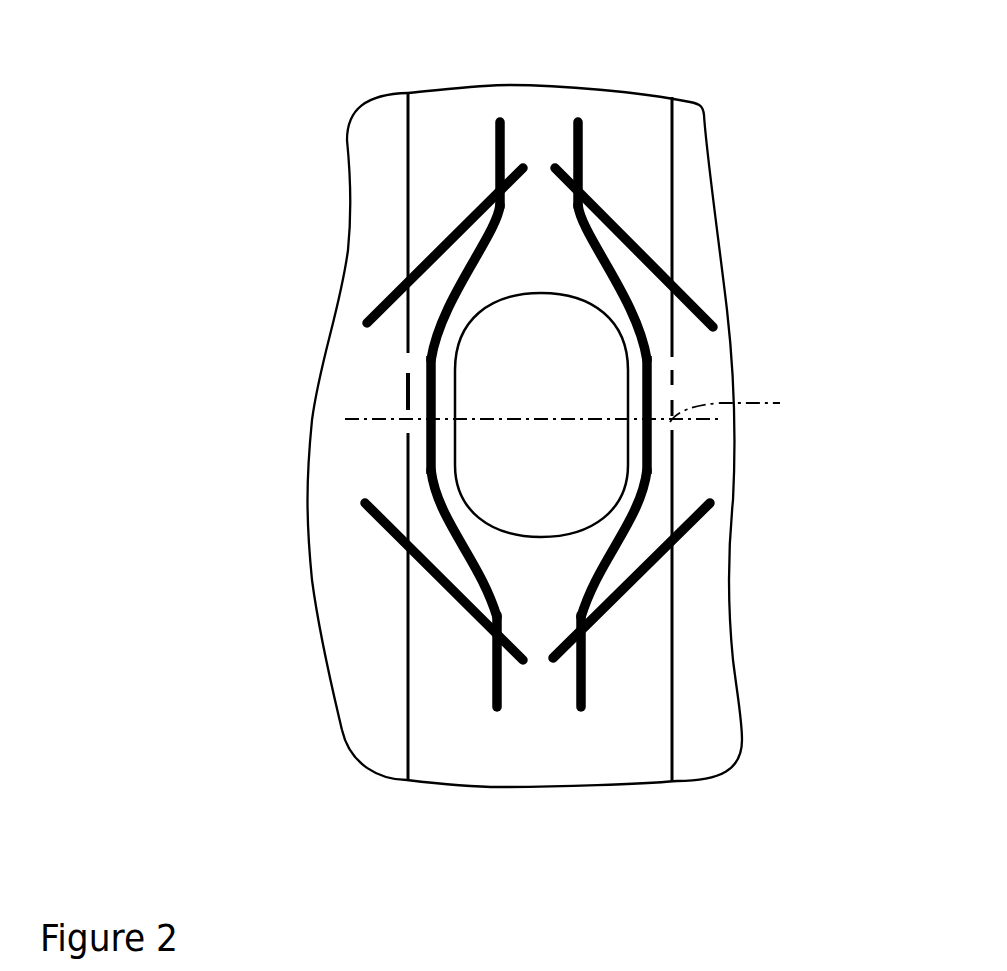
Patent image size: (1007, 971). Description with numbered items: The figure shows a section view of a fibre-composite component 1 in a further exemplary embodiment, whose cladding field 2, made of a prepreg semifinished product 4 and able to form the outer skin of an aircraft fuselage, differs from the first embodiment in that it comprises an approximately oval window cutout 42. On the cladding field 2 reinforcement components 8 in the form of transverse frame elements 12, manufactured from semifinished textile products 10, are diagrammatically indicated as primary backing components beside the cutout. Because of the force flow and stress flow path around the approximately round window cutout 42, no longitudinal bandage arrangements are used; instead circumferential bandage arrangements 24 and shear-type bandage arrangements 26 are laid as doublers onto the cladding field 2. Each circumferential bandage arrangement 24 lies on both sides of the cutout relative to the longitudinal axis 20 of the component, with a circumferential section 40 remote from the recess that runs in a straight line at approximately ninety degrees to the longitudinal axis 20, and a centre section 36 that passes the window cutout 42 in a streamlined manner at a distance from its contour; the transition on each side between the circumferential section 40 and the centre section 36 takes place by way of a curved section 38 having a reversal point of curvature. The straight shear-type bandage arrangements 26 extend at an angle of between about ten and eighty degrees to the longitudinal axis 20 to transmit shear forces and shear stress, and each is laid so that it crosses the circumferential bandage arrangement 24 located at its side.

The fibre-composite component 1 is at (235, 72).
The cladding field 2 is at (717, 200).
The prepreg semifinished product 4 is at (612, 757).
The reinforcement components 8 is at (496, 436).
The semifinished textile products 10 is at (496, 436).
The transverse frame elements 12 is at (404, 695).
The longitudinal axis 20 is at (584, 410).
The circumferential bandage arrangements 24 is at (427, 447).
The shear-type bandage arrangements 26 is at (443, 243).
The centre section 36 is at (413, 397).
The curved section 38 is at (455, 298).
The circumferential section 40 is at (493, 175).
The oval window cutout 42 is at (550, 401).